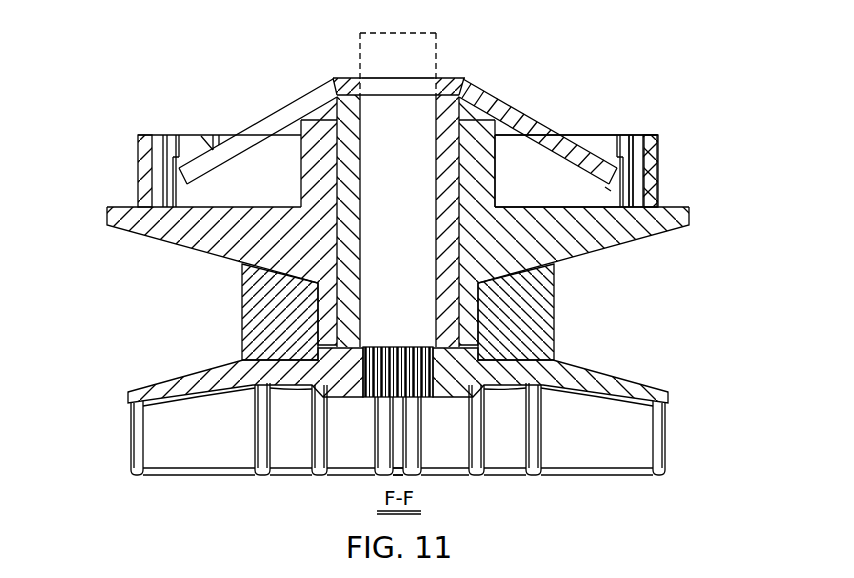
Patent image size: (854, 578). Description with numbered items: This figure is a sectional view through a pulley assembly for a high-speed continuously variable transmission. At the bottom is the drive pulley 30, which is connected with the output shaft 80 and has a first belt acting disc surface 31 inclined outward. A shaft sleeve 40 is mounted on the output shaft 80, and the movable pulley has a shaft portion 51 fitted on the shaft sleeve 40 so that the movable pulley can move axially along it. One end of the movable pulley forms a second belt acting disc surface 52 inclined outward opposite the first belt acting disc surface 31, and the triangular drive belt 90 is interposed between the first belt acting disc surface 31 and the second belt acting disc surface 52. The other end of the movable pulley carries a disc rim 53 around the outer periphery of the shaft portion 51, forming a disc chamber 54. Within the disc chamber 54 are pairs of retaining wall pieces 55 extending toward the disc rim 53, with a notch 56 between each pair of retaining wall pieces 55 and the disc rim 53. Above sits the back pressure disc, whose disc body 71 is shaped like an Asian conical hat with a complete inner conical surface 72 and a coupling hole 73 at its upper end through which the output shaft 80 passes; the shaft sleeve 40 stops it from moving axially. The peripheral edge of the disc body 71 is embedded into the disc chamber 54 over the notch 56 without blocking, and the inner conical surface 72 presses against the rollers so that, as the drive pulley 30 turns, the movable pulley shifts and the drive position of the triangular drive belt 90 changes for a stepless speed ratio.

The drive pulley 30 is at (188, 387).
The first belt acting disc surface 31 is at (595, 366).
The shaft sleeve 40 is at (468, 92).
The shaft portion 51 is at (313, 132).
The second belt acting disc surface 52 is at (117, 214).
The disc rim 53 is at (650, 142).
The disc chamber 54 is at (597, 204).
The retaining wall pieces 55 is at (557, 142).
The notch 56 is at (615, 172).
The disc body 71 is at (528, 173).
The inner conical surface 72 is at (238, 145).
The coupling hole 73 is at (377, 83).
The output shaft 80 is at (412, 43).
The triangular drive belt 90 is at (522, 313).